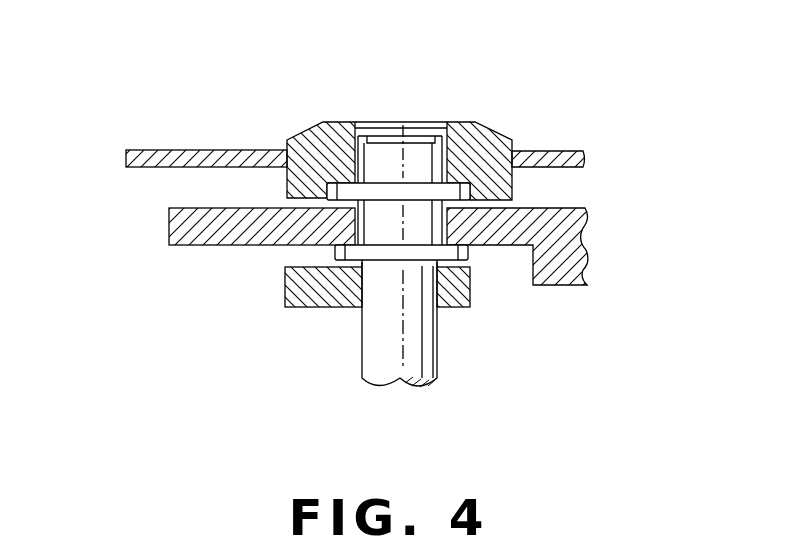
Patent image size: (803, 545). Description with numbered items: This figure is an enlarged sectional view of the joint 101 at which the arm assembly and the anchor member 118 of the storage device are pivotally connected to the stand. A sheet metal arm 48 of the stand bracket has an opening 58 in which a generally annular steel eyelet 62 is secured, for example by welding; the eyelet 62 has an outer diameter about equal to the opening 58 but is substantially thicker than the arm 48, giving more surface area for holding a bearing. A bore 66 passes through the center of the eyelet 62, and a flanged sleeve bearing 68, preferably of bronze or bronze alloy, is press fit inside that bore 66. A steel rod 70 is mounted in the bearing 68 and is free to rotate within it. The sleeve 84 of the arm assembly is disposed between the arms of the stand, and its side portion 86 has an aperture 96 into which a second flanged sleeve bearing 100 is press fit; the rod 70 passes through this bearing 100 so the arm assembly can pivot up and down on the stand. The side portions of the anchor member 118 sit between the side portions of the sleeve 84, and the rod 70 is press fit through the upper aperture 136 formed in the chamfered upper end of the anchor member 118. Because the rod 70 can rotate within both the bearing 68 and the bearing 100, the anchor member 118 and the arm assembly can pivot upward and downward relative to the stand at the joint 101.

The joint 101 is at (221, 80).
The arm 48 is at (167, 150).
The opening 58 is at (516, 159).
The eyelet 62 is at (322, 132).
The bore 66 is at (452, 160).
The flanged sleeve bearing 68 is at (398, 160).
The rod 70 is at (372, 368).
The sleeve 84 is at (598, 228).
The sleeve side portion 86 is at (192, 245).
The aperture 96 is at (450, 228).
The flanged sleeve bearing 100 is at (437, 248).
The anchor member 118 is at (283, 288).
The upper aperture 136 is at (362, 288).